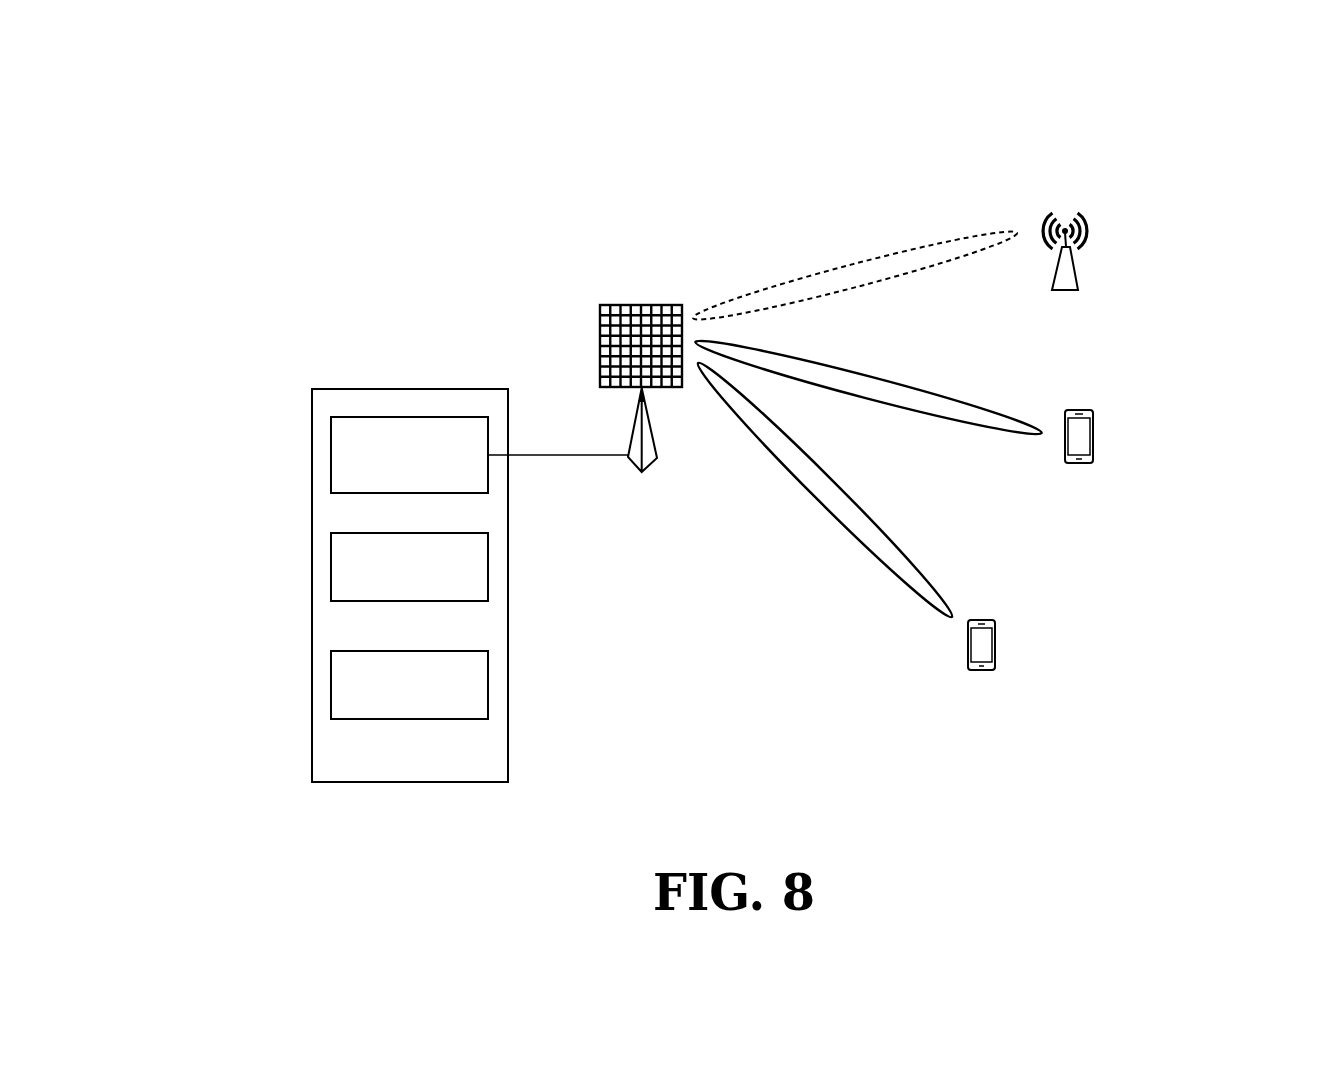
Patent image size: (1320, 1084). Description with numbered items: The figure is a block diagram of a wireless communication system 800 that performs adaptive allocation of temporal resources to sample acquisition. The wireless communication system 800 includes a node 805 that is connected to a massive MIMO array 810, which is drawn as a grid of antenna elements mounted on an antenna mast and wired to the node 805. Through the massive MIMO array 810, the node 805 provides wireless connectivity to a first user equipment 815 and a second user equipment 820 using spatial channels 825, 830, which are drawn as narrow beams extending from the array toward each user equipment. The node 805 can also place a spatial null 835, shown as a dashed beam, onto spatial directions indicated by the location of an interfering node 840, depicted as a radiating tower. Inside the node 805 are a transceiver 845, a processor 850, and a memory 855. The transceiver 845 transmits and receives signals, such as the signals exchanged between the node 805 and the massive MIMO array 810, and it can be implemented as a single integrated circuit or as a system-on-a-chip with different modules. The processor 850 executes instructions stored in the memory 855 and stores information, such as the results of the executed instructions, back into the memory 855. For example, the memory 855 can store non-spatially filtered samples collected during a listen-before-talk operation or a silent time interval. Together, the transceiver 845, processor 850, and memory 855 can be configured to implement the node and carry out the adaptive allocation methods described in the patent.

The wireless communication system 800 is at (1214, 137).
The node 805 is at (453, 770).
The massive MIMO array 810 is at (642, 303).
The user equipment 815 is at (998, 644).
The user equipment 820 is at (1096, 438).
The spatial channel 825 is at (832, 520).
The spatial channel 830 is at (962, 426).
The spatial null 835 is at (845, 265).
The interfering node 840 is at (1078, 282).
The transceiver 845 is at (423, 478).
The processor 850 is at (423, 591).
The memory 855 is at (423, 710).